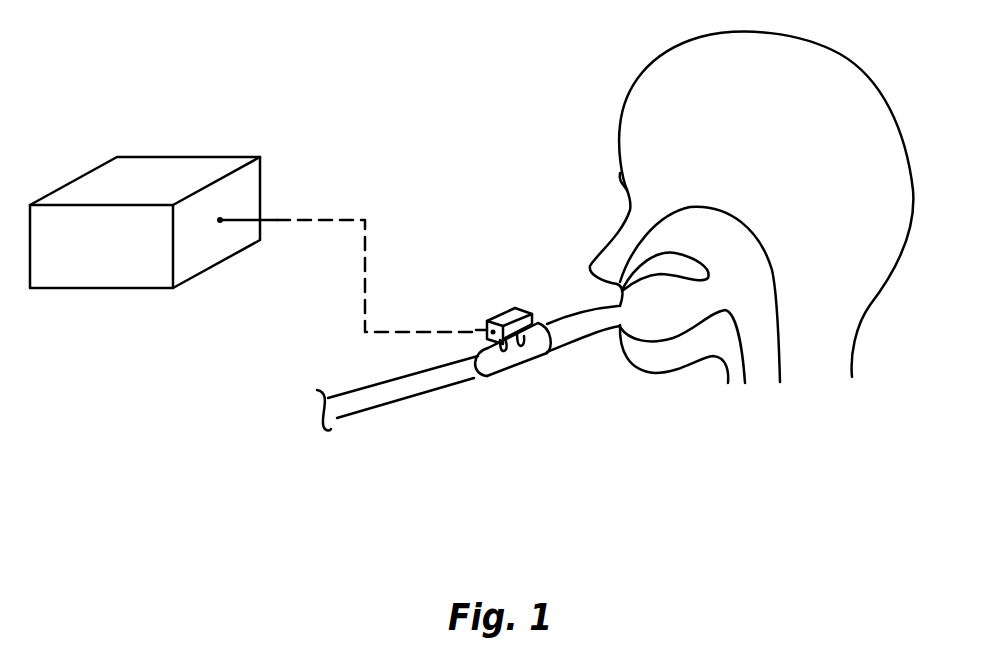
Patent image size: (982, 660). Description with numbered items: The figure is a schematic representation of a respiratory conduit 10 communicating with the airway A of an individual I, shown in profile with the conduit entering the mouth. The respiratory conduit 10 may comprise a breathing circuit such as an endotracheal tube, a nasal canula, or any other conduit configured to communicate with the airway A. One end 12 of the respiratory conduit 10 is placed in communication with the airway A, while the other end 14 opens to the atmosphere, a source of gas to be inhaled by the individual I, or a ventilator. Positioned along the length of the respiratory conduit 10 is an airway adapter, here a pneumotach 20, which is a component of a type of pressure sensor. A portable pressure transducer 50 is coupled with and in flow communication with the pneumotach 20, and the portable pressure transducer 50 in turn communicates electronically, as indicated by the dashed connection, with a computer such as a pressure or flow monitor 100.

The individual I is at (820, 62).
The airway A is at (760, 333).
The pressure or flow monitor 100 is at (73, 264).
The respiratory conduit 10 is at (485, 384).
The one end of respiratory conduit 12 is at (575, 323).
The other end of respiratory conduit 14 is at (336, 416).
The pneumotach 20 is at (509, 351).
The portable pressure transducer 50 is at (508, 313).